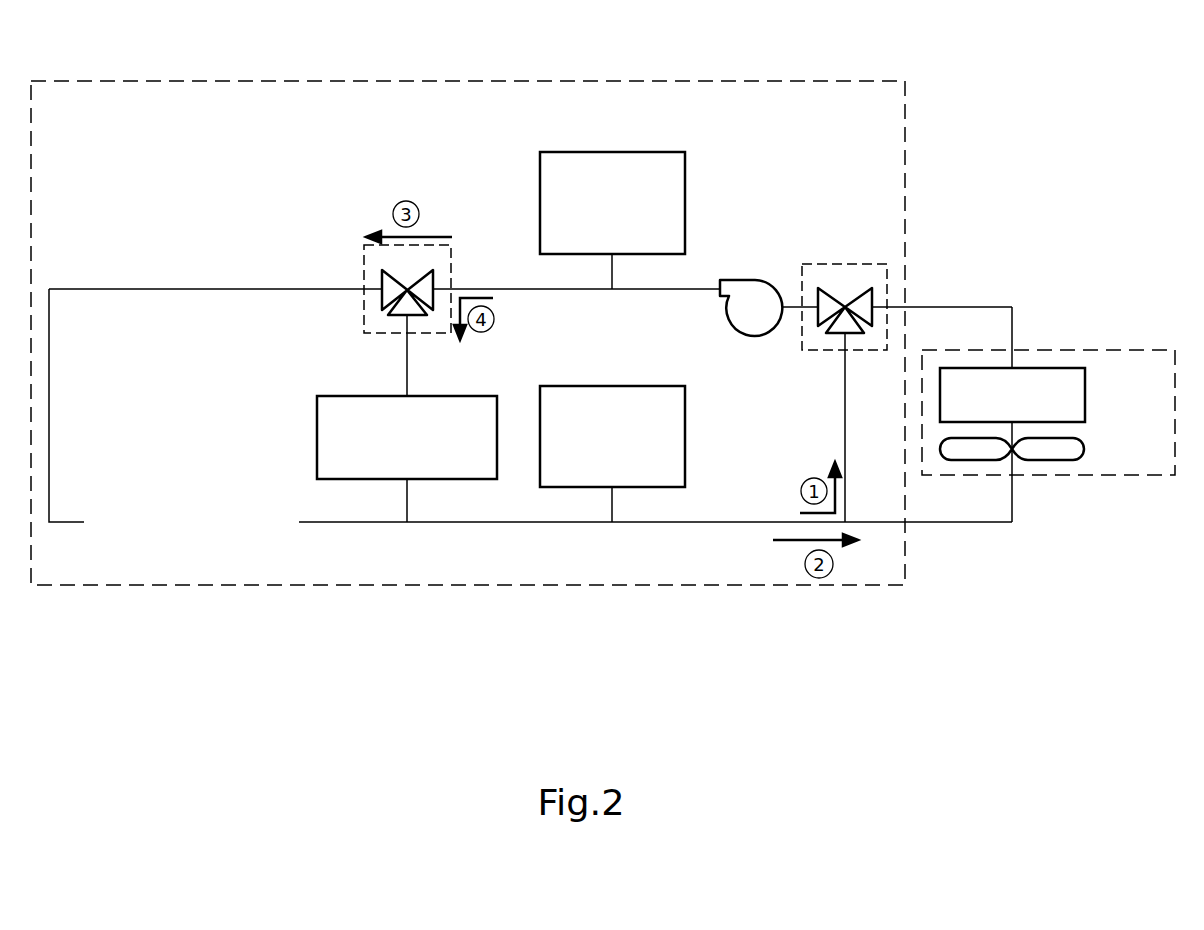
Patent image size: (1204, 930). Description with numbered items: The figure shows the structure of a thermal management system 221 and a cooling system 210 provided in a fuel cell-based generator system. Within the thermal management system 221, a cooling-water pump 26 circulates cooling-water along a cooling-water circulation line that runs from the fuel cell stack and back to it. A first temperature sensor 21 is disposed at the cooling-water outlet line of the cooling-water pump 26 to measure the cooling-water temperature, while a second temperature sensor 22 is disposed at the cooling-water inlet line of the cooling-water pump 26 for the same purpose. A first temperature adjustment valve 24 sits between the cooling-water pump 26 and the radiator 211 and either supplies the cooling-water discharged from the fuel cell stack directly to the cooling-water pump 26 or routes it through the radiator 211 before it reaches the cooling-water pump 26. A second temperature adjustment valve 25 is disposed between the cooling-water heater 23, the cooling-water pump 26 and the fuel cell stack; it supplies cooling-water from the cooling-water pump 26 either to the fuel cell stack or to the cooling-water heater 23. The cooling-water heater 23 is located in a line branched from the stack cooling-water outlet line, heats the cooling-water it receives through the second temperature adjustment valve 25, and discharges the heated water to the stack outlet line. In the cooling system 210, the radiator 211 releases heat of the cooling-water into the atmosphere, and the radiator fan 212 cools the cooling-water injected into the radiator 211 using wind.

The thermal management system 221 is at (466, 80).
The first temperature sensor 21 is at (611, 150).
The second temperature sensor 22 is at (611, 385).
The cooling-water heater 23 is at (353, 395).
The first temperature adjustment valve 24 is at (843, 262).
The second temperature adjustment valve 25 is at (364, 262).
The cooling-water pump 26 is at (736, 278).
The cooling system 210 is at (1083, 348).
The radiator 211 is at (1087, 394).
The radiator fan 212 is at (1087, 448).